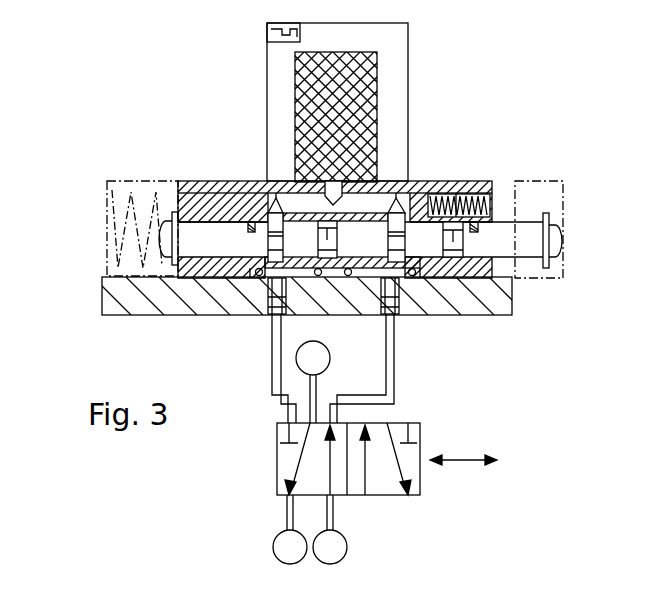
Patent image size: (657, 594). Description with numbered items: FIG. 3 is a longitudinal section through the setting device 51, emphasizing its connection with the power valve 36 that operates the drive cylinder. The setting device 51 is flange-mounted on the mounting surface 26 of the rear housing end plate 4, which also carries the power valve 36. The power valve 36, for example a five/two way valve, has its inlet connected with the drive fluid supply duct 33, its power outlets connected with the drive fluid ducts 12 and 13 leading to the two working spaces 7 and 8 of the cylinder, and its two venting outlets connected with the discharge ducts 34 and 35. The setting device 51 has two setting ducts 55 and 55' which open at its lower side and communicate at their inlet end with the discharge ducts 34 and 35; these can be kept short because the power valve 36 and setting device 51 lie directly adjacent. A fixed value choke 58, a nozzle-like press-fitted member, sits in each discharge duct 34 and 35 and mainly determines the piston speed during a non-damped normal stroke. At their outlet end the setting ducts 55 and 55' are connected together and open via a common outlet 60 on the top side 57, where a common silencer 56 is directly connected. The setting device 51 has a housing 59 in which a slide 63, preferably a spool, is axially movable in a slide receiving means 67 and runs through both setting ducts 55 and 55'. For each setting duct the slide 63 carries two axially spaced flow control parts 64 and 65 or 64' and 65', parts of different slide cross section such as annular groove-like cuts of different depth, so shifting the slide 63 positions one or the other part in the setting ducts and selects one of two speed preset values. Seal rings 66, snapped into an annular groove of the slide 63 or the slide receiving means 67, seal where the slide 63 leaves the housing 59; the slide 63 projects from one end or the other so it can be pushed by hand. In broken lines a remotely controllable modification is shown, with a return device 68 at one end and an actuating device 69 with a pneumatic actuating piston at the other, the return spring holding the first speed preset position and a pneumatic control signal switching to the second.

The housing end plate 4 is at (117, 295).
The working space 7 is at (290, 547).
The working space 8 is at (330, 547).
The drive fluid duct 12 is at (333, 508).
The drive fluid duct 13 is at (287, 510).
The mounting surface 26 is at (126, 264).
The drive fluid supply duct 33 is at (316, 382).
The discharge duct 34 is at (272, 335).
The discharge duct 35 is at (388, 348).
The power valve 36 is at (277, 462).
The setting device 51 is at (205, 122).
The setting duct 55 is at (257, 160).
The setting duct 55' is at (418, 165).
The silencer 56 is at (392, 44).
The top side 57 is at (437, 175).
The fixed value choke 58 is at (270, 296).
The housing 59 is at (193, 193).
The common outlet 60 is at (334, 178).
The slide 63 is at (513, 230).
The flow control part 64 is at (237, 289).
The flow control part 64' is at (441, 288).
The flow control part 65 is at (345, 288).
The flow control part 65' is at (511, 279).
The seal ring 66 is at (251, 222).
The slide receiving means 67 is at (193, 258).
The return device 68 is at (128, 178).
The actuating device 69 is at (550, 180).